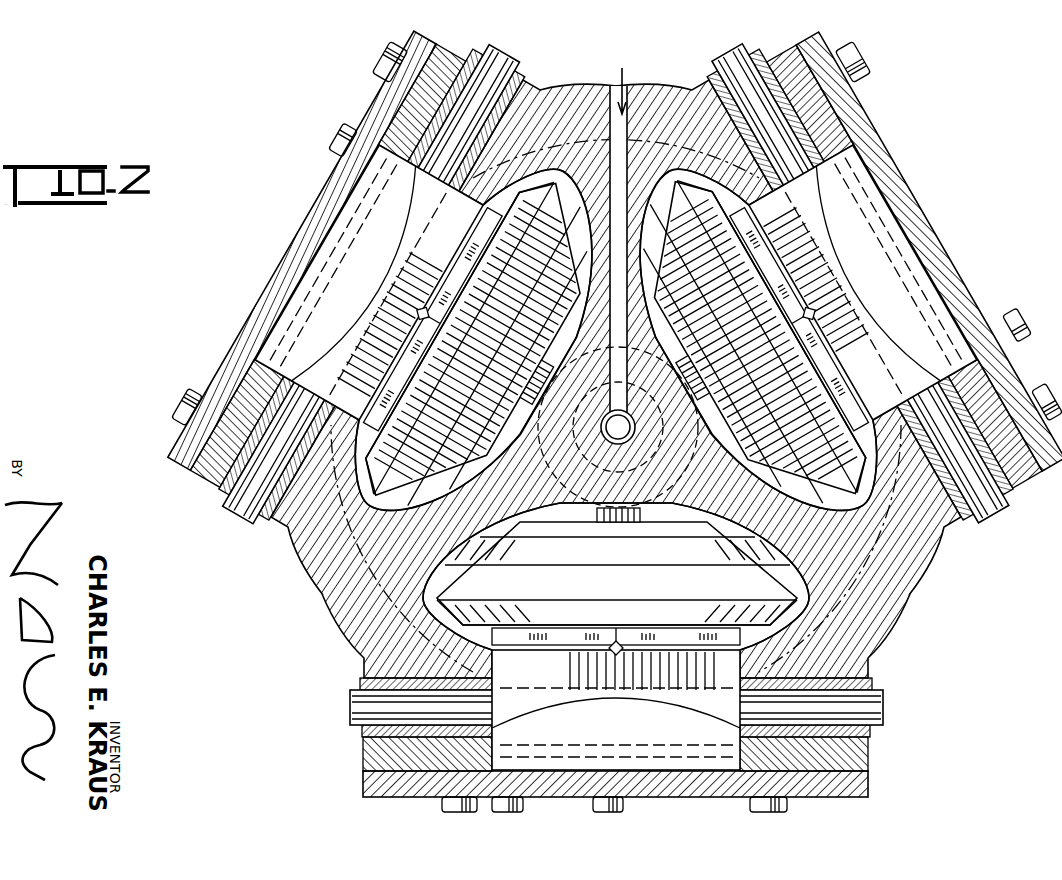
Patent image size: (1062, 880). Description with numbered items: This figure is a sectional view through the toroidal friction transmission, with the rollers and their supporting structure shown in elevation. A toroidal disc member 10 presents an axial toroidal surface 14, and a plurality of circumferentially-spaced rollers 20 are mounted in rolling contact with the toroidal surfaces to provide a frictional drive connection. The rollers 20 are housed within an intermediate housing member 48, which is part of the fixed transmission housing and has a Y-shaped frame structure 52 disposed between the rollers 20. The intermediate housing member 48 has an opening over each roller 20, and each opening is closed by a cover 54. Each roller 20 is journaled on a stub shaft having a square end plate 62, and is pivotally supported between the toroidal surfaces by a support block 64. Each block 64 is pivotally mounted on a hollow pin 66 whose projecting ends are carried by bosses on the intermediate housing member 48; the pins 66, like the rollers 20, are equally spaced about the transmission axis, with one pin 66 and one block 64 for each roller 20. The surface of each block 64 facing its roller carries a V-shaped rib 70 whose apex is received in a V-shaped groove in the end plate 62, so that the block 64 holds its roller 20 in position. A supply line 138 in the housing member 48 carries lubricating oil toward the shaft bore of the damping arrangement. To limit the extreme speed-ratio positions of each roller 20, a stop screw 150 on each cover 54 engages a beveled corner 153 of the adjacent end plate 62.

The toroidal disc member 10 is at (604, 148).
The axial toroidal surface 14 is at (545, 180).
The roller 20 is at (615, 396).
The intermediate housing member 48 is at (628, 108).
The Y-shaped frame structure 52 is at (596, 427).
The cover 54 is at (290, 280).
The end plate 62 is at (455, 310).
The support block 64 is at (380, 210).
The hollow pin 66 is at (516, 65).
The V-shaped rib 70 is at (432, 292).
The supply line 138 is at (624, 372).
The stop screw 150 is at (345, 145).
The beveled corner 153 is at (742, 178).